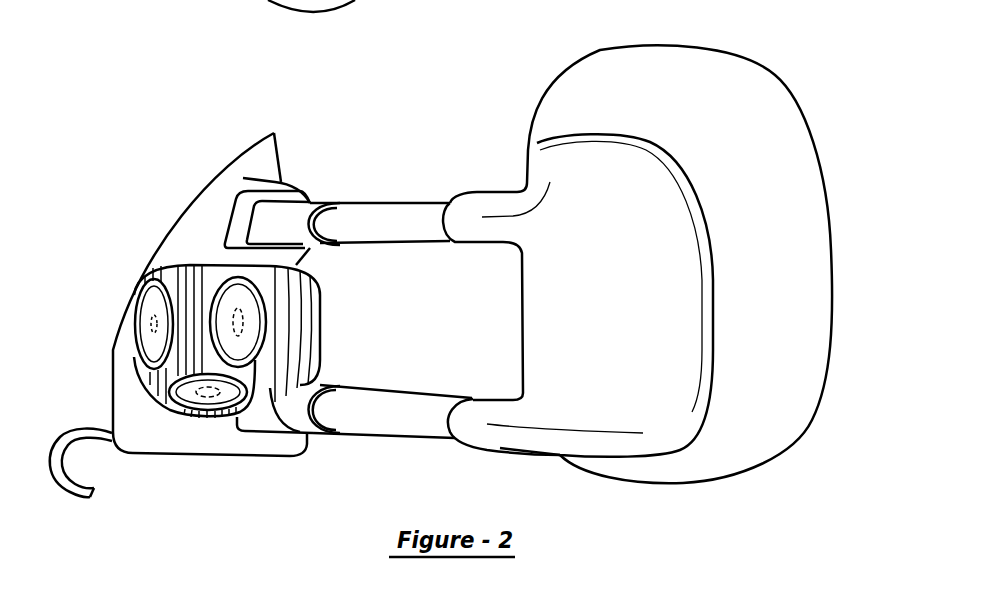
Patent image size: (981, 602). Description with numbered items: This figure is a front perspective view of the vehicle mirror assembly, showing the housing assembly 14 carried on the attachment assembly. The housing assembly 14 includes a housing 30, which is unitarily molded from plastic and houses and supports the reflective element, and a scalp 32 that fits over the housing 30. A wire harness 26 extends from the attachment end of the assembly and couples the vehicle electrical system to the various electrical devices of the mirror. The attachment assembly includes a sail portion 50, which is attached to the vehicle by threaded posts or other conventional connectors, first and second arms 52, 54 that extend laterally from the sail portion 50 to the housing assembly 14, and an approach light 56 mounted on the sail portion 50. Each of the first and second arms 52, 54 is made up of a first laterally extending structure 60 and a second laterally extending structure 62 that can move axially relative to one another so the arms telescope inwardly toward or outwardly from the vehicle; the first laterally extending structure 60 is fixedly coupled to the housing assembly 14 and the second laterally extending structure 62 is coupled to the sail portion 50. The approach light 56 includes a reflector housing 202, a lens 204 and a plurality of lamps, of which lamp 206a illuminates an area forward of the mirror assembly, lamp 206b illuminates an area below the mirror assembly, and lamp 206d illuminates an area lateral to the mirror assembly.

The housing assembly 14 is at (790, 78).
The wire harness 26 is at (86, 430).
The housing 30 is at (817, 165).
The scalp 32 is at (687, 282).
The sail portion 50 is at (272, 160).
The first arm 52 is at (399, 203).
The second arm 54 is at (411, 398).
The approach light 56 is at (170, 248).
The first laterally extending structure 60 is at (428, 240).
The second laterally extending structure 62 is at (300, 244).
The reflector housing 202 is at (172, 400).
The lens 204 is at (200, 285).
The lamp 206a is at (147, 322).
The lamp 206b is at (205, 392).
The lamp 206d is at (240, 322).